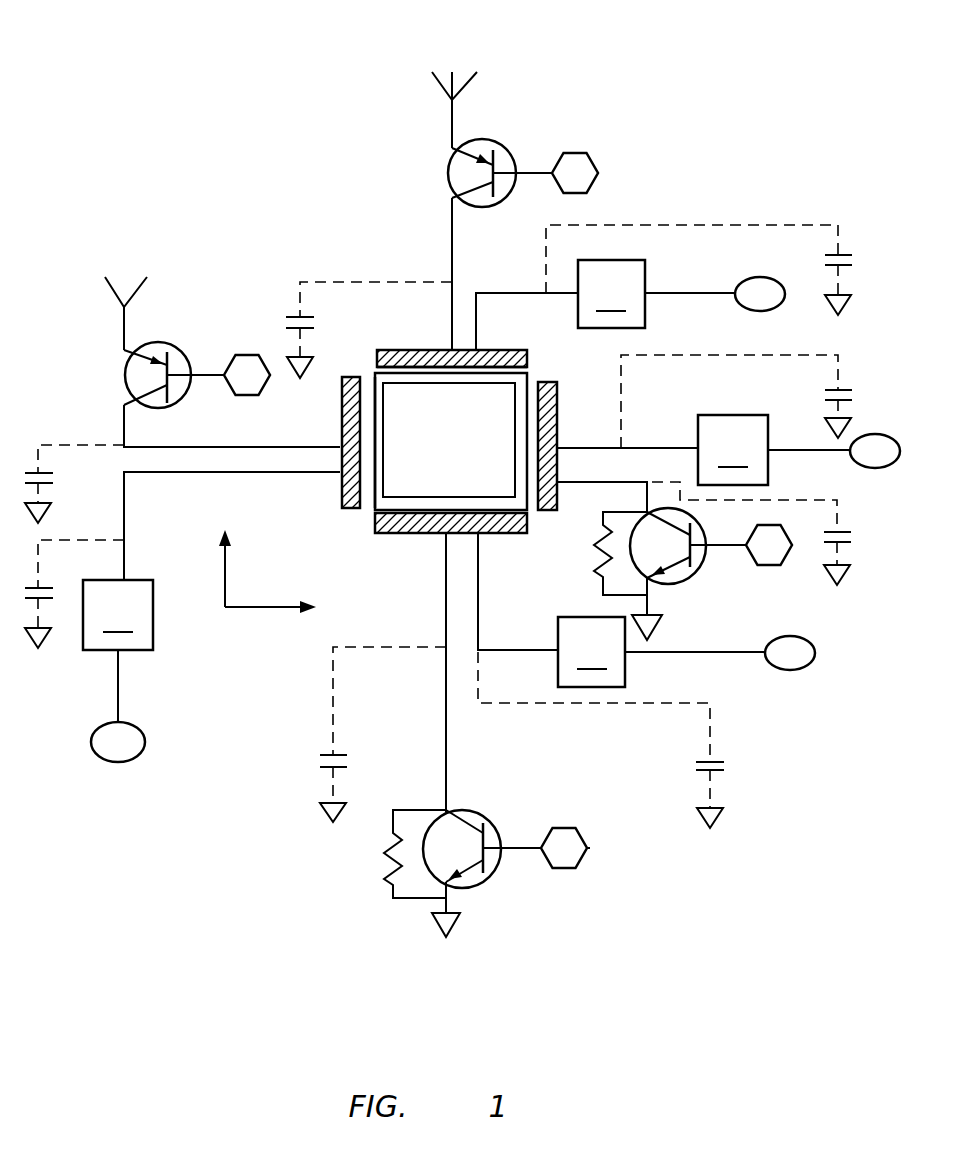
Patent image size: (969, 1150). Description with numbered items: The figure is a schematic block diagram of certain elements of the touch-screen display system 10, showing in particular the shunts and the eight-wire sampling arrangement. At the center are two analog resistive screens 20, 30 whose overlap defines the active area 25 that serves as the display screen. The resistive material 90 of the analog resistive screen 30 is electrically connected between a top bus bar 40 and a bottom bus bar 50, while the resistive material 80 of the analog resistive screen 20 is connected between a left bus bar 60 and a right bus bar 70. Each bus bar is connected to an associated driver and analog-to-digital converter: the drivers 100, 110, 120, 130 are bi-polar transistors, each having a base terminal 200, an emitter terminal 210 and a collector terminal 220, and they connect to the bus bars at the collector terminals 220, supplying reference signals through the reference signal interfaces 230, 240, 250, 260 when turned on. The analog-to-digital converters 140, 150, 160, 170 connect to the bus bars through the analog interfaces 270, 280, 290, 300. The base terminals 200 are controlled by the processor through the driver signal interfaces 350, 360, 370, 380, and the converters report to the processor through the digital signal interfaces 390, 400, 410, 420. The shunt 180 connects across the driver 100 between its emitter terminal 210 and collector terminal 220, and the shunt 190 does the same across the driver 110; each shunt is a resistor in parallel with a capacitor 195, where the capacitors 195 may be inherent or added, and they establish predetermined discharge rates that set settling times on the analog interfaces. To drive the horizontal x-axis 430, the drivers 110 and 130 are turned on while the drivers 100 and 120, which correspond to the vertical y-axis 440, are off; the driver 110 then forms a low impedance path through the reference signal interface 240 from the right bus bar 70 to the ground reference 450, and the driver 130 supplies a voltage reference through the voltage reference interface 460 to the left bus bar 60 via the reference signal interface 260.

The touch-screen display system 10 is at (290, 236).
The analog resistive screen 20 is at (343, 510).
The active area 25 is at (517, 402).
The analog resistive screen 30 is at (378, 358).
The top bus bar 40 is at (426, 350).
The bottom bus bar 50 is at (425, 528).
The left bus bar 60 is at (340, 486).
The right bus bar 70 is at (550, 382).
The resistive material 80 is at (365, 370).
The resistive material 90 is at (375, 402).
The driver 100 is at (498, 872).
The driver 110 is at (690, 578).
The driver 120 is at (500, 142).
The driver 130 is at (128, 365).
The analog-to-digital converter 140 is at (661, 652).
The analog-to-digital converter 150 is at (774, 450).
The analog-to-digital converter 160 is at (656, 294).
The analog-to-digital converter 170 is at (118, 651).
The shunt 180 is at (393, 877).
The shunt 190 is at (598, 572).
The capacitor 195 is at (845, 255).
The base terminal 200 is at (522, 846).
The emitter terminal 210 is at (470, 882).
The collector terminal 220 is at (463, 810).
The reference signal interface 230 is at (446, 594).
The reference signal interface 240 is at (586, 484).
The reference signal interface 250 is at (451, 232).
The reference signal interface 260 is at (272, 446).
The analog interface 270 is at (480, 595).
The analog interface 280 is at (660, 447).
The analog interface 290 is at (510, 292).
The analog interface 300 is at (124, 505).
The driver signal interface 350 is at (586, 848).
The driver signal interface 360 is at (770, 566).
The driver signal interface 370 is at (590, 160).
The driver signal interface 380 is at (243, 352).
The digital signal interface 390 is at (802, 645).
The digital signal interface 400 is at (891, 438).
The digital signal interface 410 is at (762, 278).
The digital signal interface 420 is at (143, 735).
The x-axis 430 is at (250, 612).
The y-axis 440 is at (226, 564).
The ground reference 450 is at (428, 915).
The voltage reference interface 460 is at (457, 75).